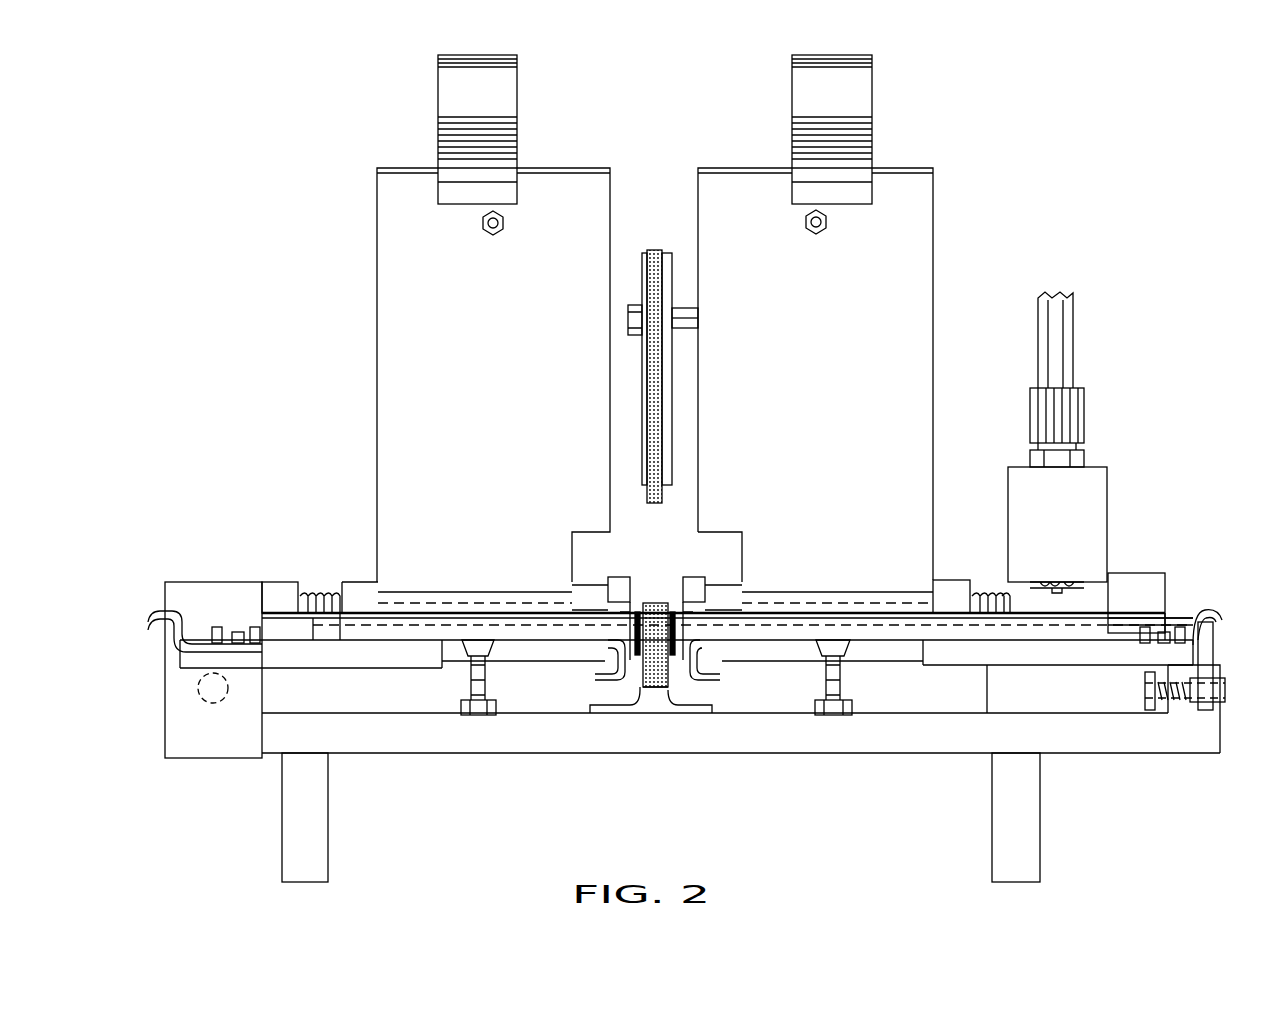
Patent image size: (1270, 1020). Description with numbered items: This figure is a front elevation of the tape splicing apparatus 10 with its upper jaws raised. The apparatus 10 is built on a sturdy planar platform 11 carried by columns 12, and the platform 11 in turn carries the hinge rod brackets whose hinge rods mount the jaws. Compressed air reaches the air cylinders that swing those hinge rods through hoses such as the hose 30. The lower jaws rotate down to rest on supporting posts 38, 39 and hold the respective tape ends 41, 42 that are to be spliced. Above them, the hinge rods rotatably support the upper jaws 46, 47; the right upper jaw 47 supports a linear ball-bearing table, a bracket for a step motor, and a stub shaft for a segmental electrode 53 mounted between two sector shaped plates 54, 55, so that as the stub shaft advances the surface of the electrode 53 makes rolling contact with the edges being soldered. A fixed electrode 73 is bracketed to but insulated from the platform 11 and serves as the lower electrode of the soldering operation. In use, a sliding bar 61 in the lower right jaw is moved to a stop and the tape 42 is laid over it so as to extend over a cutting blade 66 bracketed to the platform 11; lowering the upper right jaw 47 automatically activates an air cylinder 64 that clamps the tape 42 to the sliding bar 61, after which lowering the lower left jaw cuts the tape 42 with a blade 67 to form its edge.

The apparatus 10 is at (1208, 798).
The platform 11 is at (880, 730).
The columns 12 is at (298, 808).
The hose 30 is at (235, 690).
The supporting post 38 is at (485, 668).
The supporting post 39 is at (830, 672).
The tape end 41 is at (262, 613).
The tape end 42 is at (1165, 607).
The upper jaw 46 is at (499, 392).
The upper jaw 47 is at (816, 392).
The segmental electrode 53 is at (663, 504).
The sector shaped plate 54 is at (641, 440).
The sector shaped plate 55 is at (668, 430).
The sliding bar 61 is at (1123, 627).
The air cylinder 64 is at (1093, 513).
The cutting blade 66 is at (655, 622).
The blade 67 is at (643, 685).
The fixed electrode 73 is at (657, 690).